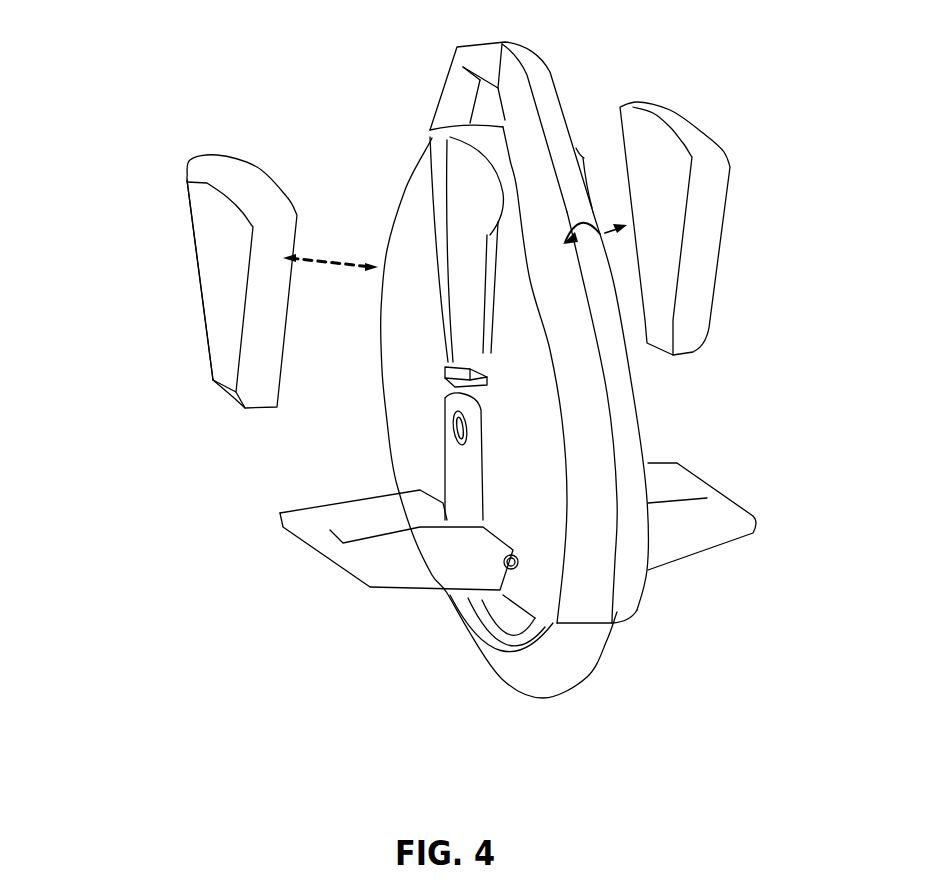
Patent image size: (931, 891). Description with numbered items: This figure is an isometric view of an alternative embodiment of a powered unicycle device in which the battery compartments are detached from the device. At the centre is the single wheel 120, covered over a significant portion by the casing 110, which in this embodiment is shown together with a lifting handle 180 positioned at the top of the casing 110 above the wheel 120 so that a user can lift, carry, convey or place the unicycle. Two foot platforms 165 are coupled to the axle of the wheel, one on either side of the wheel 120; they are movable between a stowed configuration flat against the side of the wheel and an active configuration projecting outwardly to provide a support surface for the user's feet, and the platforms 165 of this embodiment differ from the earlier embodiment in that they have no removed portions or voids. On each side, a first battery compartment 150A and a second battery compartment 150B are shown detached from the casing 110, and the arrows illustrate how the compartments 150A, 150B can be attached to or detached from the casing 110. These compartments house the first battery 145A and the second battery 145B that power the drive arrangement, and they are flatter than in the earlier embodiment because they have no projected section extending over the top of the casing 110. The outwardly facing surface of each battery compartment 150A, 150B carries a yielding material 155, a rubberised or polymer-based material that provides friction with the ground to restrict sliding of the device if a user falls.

The casing 110 is at (580, 407).
The wheel 120 is at (490, 680).
The first battery 145A is at (450, 138).
The second battery 145B is at (583, 157).
The first battery compartment 150A is at (210, 182).
The second battery compartment 150B is at (705, 157).
The yielding material 155 is at (185, 248).
The foot platforms 165 is at (282, 543).
The lifting handle 180 is at (507, 48).